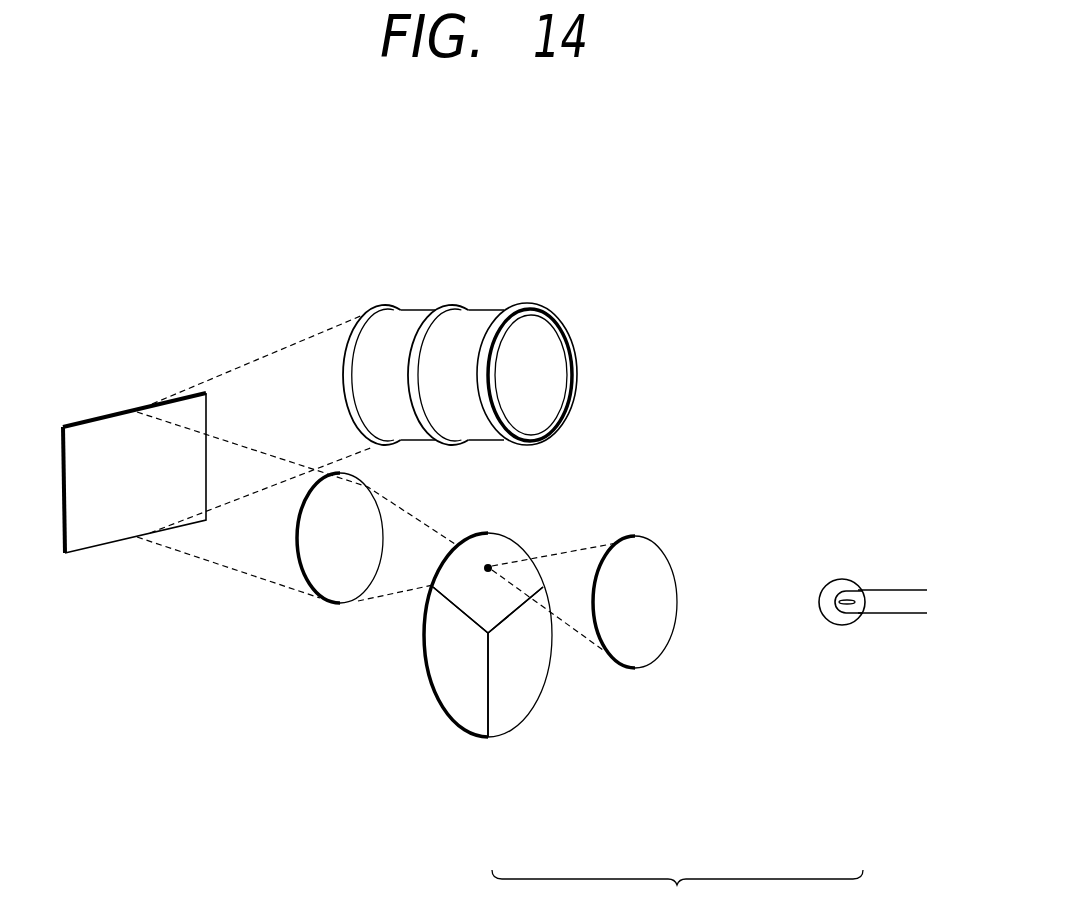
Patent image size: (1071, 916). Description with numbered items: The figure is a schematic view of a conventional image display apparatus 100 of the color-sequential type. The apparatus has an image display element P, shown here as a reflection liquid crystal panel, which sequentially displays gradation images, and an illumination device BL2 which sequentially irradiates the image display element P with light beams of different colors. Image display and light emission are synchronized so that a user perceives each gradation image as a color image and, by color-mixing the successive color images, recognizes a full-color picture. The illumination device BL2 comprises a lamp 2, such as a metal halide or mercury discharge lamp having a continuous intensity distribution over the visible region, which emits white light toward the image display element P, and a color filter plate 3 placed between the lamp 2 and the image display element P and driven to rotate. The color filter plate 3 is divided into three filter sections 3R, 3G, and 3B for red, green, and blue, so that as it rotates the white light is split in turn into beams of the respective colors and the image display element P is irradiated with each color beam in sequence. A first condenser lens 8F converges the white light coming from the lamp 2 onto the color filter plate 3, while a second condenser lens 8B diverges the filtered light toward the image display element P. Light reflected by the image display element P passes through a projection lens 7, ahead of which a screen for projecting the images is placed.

The image display apparatus 100 is at (595, 242).
The image display element P is at (112, 542).
The projection lens 7 is at (487, 442).
The second condenser lens 8B is at (338, 603).
The first condenser lens 8F is at (653, 538).
The color filter plate 3 is at (502, 687).
The red filter section 3R is at (512, 552).
The blue filter section 3B is at (453, 702).
The green filter section 3G is at (535, 680).
The lamp 2 is at (842, 625).
The illumination device BL2 is at (677, 893).